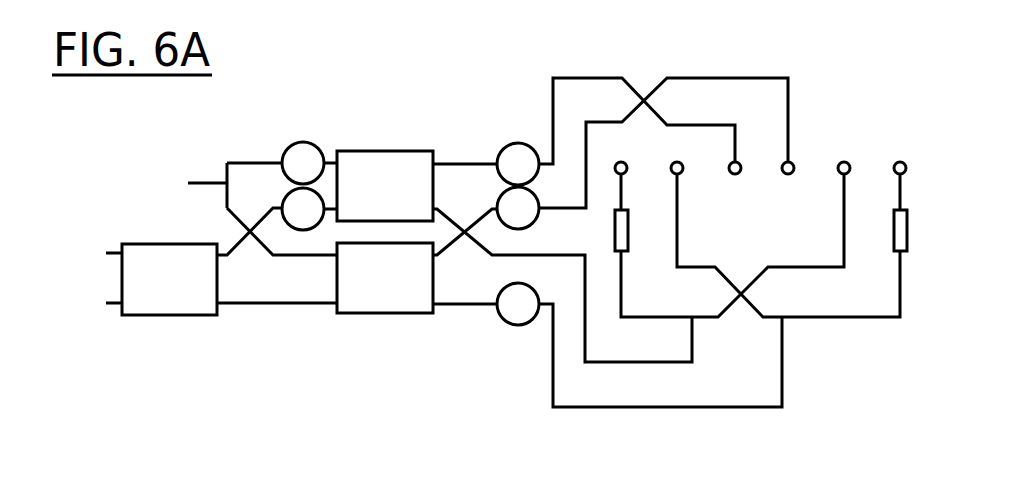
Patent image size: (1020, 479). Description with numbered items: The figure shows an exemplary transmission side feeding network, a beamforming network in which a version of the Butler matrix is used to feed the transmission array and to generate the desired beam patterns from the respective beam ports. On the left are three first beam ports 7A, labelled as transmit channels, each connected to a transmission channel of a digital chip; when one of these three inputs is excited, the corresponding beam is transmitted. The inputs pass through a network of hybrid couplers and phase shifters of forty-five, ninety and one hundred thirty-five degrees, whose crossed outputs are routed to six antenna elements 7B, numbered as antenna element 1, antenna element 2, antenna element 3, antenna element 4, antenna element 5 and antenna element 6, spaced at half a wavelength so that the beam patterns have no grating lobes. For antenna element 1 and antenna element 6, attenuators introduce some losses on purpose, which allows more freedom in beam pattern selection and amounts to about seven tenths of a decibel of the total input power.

The first beam ports 7A is at (77, 323).
The antenna elements 7B is at (892, 152).
The antenna element 1 is at (729, 228).
The antenna element 2 is at (812, 228).
The antenna element 3 is at (741, 157).
The antenna element 4 is at (795, 157).
The antenna element 5 is at (852, 157).
The antenna element 6 is at (908, 157).